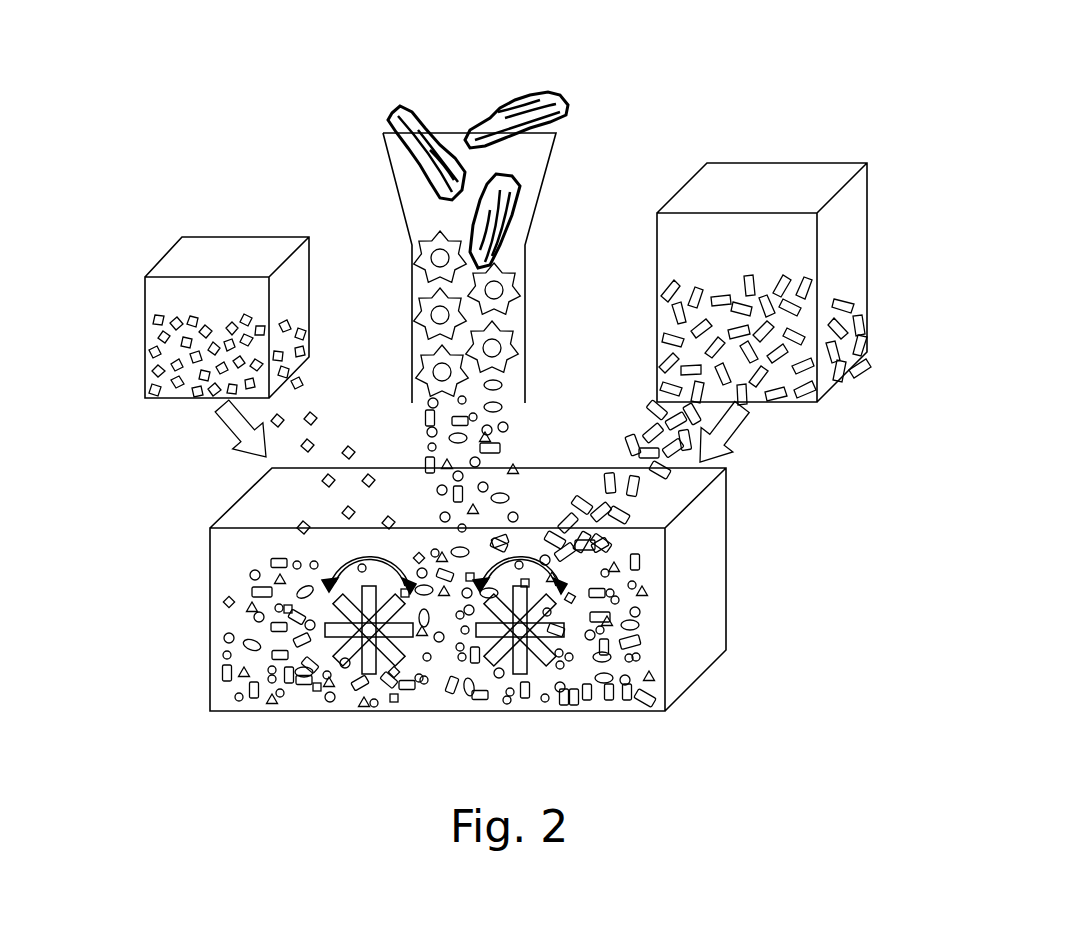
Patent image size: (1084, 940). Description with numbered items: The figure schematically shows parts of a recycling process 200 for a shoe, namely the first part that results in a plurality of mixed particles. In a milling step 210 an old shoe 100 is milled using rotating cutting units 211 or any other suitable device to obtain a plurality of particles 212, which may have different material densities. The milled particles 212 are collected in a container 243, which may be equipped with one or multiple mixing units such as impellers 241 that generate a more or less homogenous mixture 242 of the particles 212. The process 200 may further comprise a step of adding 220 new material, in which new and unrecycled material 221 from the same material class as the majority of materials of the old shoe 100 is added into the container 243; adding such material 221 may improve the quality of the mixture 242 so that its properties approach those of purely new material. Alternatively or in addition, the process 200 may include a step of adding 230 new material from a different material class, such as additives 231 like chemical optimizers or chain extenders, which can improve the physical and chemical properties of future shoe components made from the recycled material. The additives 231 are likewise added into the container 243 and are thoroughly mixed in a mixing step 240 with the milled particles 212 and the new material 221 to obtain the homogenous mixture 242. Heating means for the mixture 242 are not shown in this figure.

The old shoe 100 is at (527, 105).
The recycling process 200 is at (207, 180).
The milling process step 210 is at (538, 246).
The rotating cutting units 211 is at (423, 287).
The milled particles 212 is at (472, 455).
The step of adding new material 220 is at (753, 442).
The new and unrecycled material 221 is at (767, 335).
The step of adding additive material 230 is at (205, 433).
The additives 231 is at (170, 347).
The mixing step 240 is at (750, 622).
The impellers 241 is at (398, 700).
The mixture of particles 242 is at (632, 657).
The container 243 is at (692, 557).